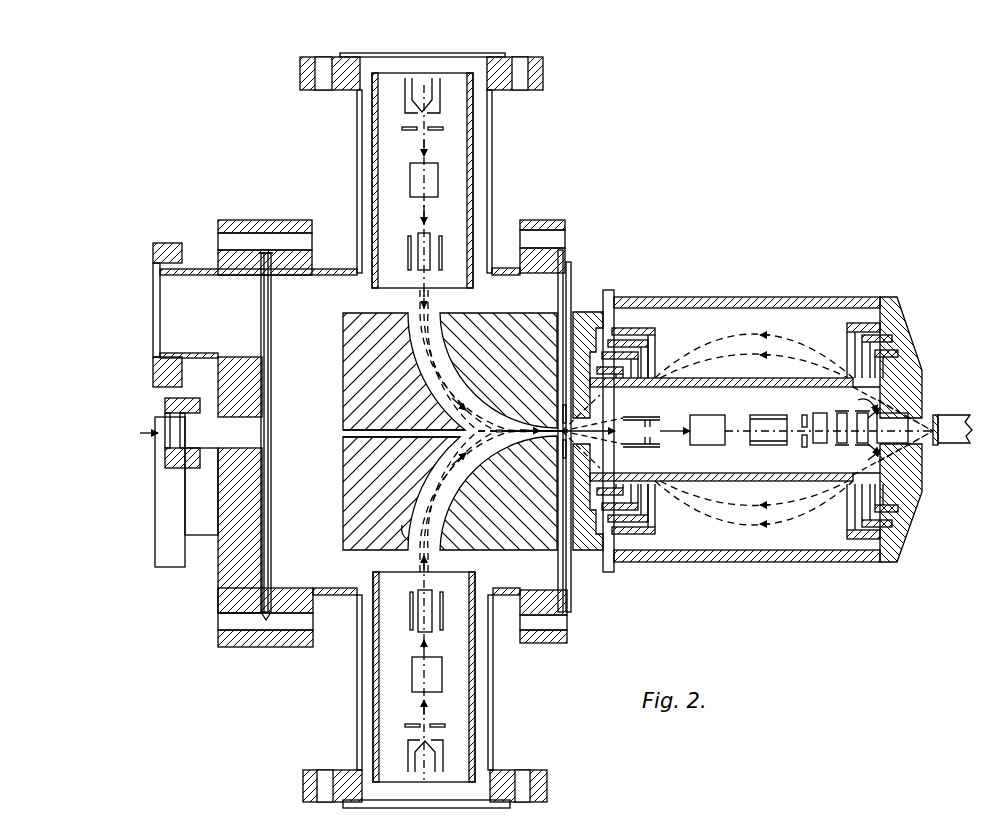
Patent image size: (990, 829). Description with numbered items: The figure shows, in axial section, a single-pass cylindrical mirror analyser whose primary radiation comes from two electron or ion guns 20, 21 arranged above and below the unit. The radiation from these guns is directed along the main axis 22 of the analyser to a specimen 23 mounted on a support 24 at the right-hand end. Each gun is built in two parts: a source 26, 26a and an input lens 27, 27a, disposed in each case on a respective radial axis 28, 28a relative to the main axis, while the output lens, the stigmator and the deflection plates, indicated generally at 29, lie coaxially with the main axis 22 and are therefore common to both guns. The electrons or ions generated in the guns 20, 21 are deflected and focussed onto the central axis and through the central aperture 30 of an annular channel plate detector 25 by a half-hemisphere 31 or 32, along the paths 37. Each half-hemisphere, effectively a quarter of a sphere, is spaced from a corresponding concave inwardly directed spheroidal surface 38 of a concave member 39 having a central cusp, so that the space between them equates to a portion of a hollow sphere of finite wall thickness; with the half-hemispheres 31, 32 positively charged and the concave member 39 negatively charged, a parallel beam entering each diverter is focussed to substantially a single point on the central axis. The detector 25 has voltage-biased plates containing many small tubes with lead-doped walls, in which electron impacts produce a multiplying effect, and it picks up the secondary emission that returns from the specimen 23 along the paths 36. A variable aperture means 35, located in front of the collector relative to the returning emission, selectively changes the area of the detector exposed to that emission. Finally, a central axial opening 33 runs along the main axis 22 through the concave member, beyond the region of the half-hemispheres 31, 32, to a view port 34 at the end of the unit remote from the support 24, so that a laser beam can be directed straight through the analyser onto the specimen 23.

The electron or ion gun 20 is at (388, 157).
The electron or ion gun 21 is at (458, 706).
The axis 22 is at (737, 417).
The specimen 23 is at (936, 414).
The support 24 is at (956, 445).
The annular channel plate detector 25 is at (556, 470).
The source 26 is at (420, 100).
The source 26a is at (432, 762).
The input lens 27 is at (442, 178).
The input lens 27a is at (446, 675).
The radial axis 28 is at (432, 215).
The radial axis 28a is at (416, 640).
The output lens, stigmator and deflection plates 29 is at (718, 472).
The central aperture 30 is at (625, 412).
The half-hemisphere 31 is at (481, 345).
The half-hemisphere 32 is at (510, 525).
The central axial opening 33 is at (355, 418).
The view port 34 is at (190, 440).
The variable aperture means 35 is at (563, 345).
The paths of secondary emission 36 is at (737, 337).
The paths 37 is at (410, 305).
The concave inwardly directed spheroidal surface 38 is at (402, 545).
The concave member 39 is at (355, 358).